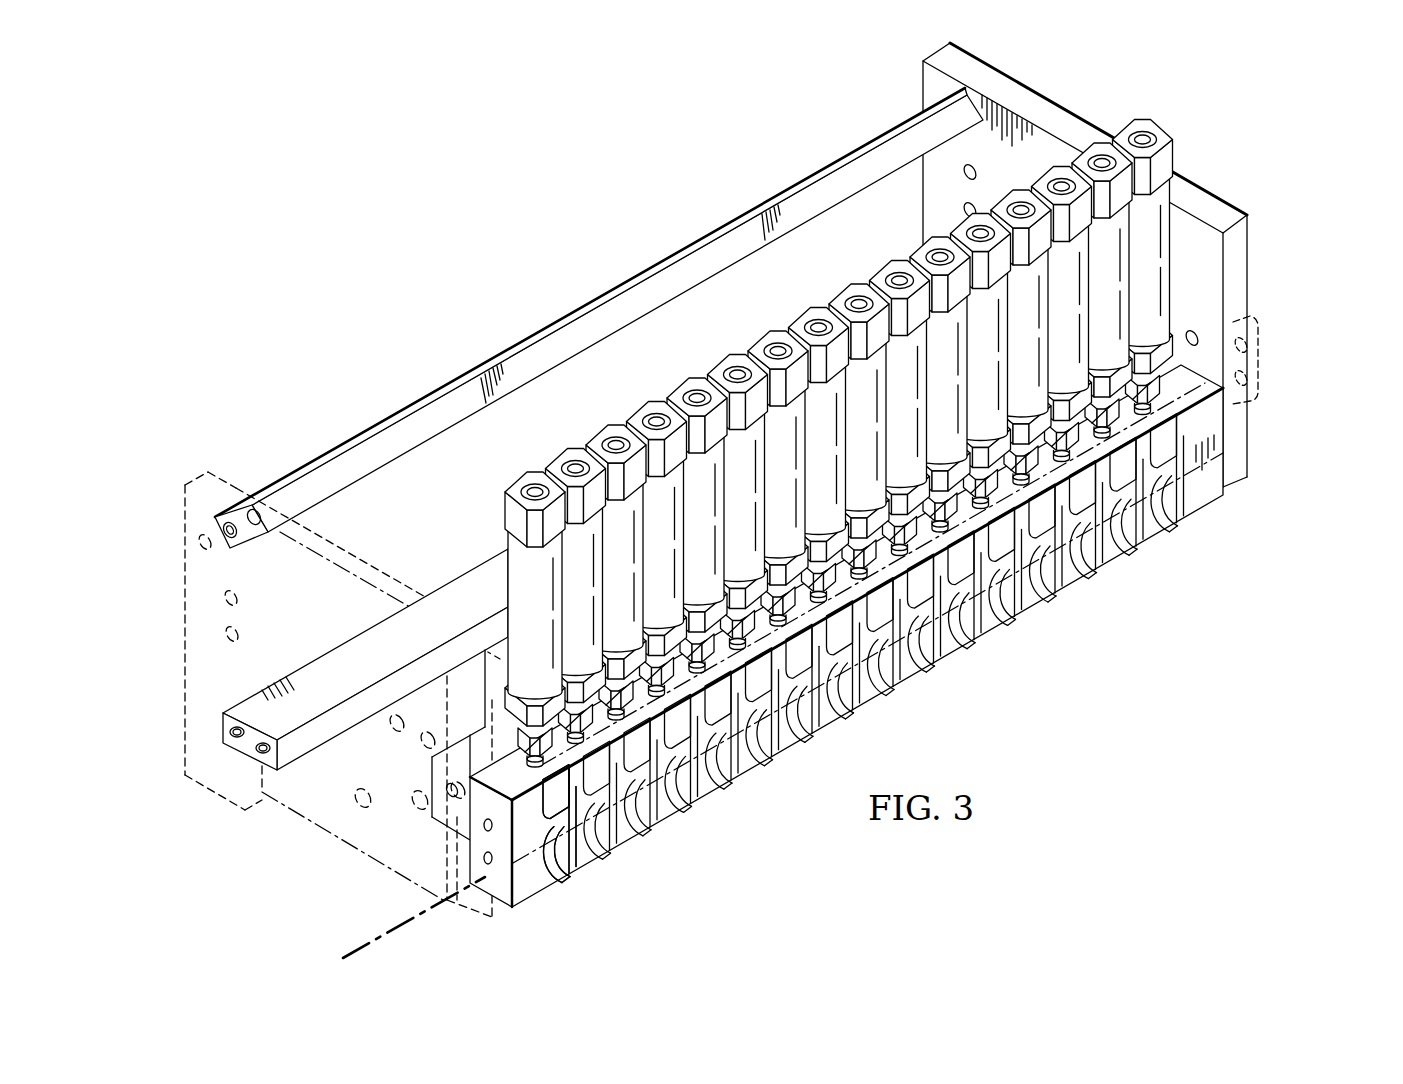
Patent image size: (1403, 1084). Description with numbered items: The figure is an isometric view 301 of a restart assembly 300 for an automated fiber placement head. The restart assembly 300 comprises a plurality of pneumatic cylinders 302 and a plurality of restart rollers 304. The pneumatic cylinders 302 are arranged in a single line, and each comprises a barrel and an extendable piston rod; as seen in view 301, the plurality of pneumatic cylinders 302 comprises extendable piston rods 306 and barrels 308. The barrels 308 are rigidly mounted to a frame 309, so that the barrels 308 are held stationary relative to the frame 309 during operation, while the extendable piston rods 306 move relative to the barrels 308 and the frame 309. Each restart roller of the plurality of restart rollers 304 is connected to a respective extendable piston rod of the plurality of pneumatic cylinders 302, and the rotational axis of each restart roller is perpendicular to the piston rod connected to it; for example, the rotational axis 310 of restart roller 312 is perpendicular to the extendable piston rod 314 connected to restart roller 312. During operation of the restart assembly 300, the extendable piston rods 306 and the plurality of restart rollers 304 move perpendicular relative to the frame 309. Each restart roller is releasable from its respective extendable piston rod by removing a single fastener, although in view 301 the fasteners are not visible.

The restart assembly 300 is at (540, 236).
The view 301 is at (350, 132).
The plurality of pneumatic cylinders 302 is at (484, 525).
The plurality of restart rollers 304 is at (1048, 618).
The extendable piston rods 306 is at (1180, 386).
The barrels 308 is at (1170, 237).
The frame 309 is at (436, 383).
The rotational axis 310 is at (356, 947).
The restart roller 312 is at (566, 882).
The extendable piston rod 314 is at (518, 732).